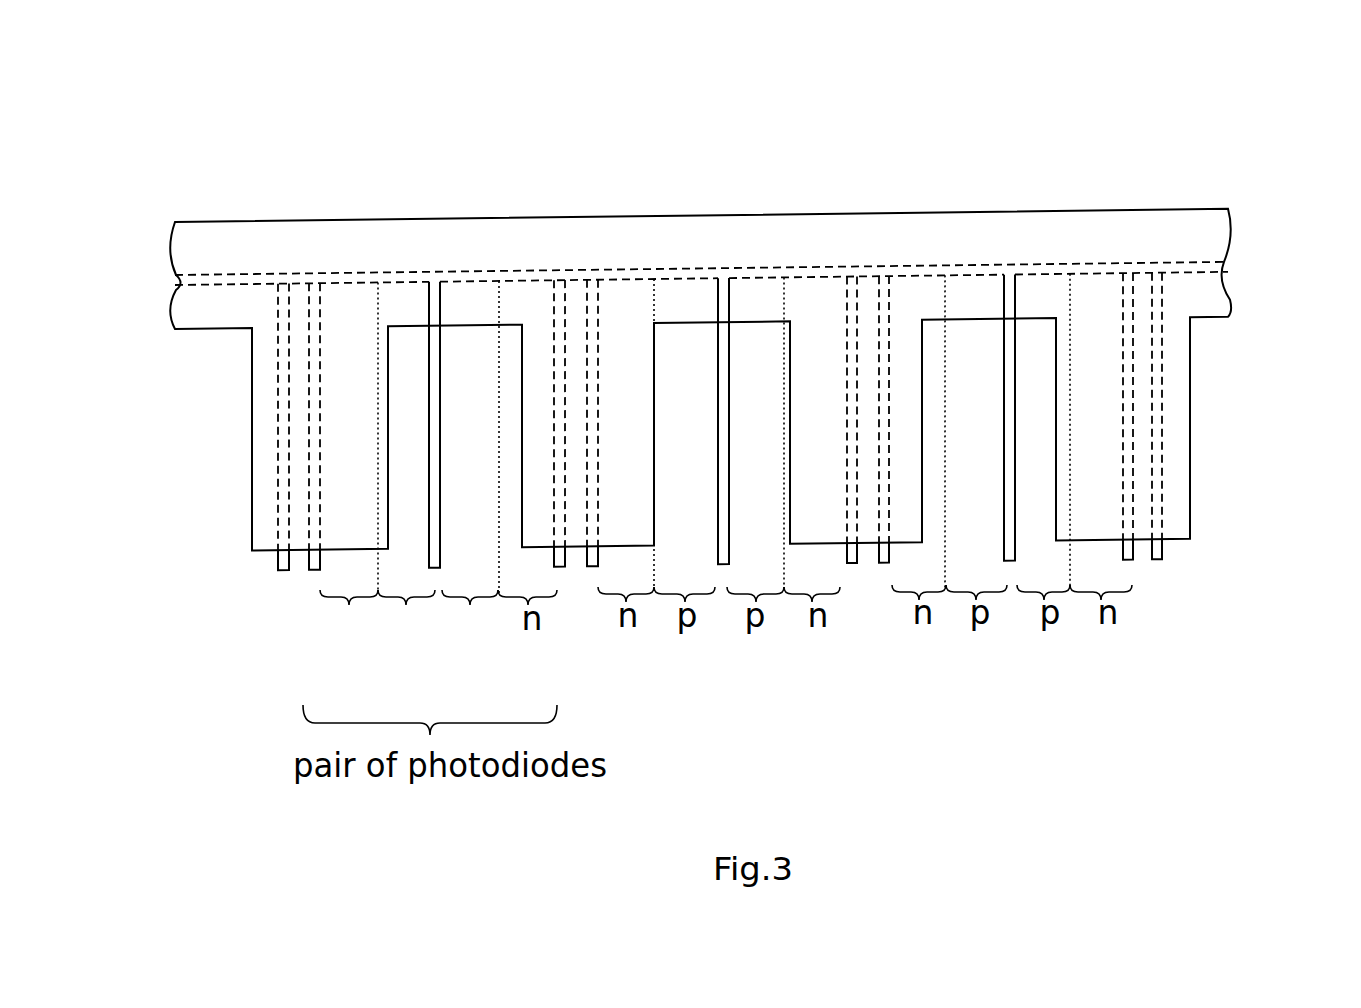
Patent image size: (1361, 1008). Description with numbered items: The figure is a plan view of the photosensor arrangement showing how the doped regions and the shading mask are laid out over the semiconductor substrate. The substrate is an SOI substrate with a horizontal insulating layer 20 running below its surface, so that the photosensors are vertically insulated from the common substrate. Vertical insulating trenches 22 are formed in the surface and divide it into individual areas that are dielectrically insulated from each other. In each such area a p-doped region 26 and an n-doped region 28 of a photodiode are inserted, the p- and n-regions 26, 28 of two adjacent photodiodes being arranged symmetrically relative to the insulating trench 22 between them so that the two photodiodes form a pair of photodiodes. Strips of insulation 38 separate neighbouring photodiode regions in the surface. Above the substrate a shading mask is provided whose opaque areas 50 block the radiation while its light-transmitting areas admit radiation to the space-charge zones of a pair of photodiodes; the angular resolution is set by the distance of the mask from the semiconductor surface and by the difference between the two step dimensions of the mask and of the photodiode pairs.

The horizontal insulating layer 20 is at (1180, 267).
The vertical insulating trench 22 is at (726, 297).
The p-doped region 26 is at (410, 591).
The n-doped region 28 is at (340, 591).
The insulation 38 is at (428, 378).
The opaque area 50 is at (1013, 230).